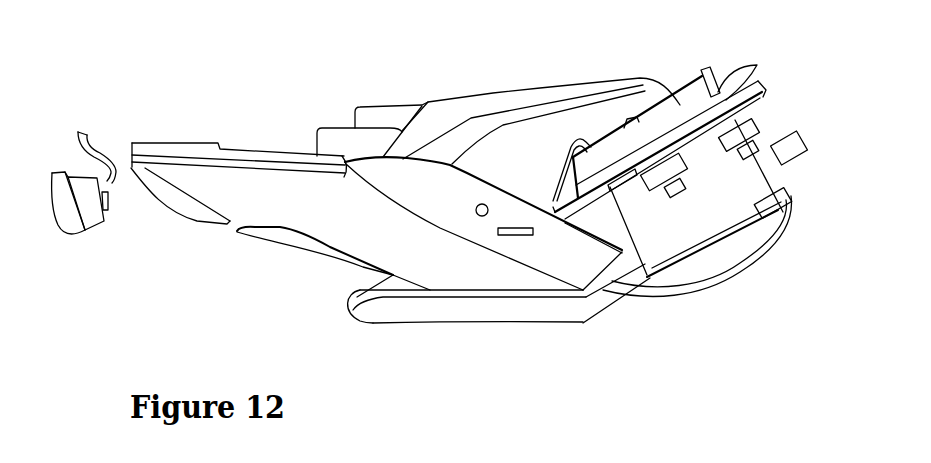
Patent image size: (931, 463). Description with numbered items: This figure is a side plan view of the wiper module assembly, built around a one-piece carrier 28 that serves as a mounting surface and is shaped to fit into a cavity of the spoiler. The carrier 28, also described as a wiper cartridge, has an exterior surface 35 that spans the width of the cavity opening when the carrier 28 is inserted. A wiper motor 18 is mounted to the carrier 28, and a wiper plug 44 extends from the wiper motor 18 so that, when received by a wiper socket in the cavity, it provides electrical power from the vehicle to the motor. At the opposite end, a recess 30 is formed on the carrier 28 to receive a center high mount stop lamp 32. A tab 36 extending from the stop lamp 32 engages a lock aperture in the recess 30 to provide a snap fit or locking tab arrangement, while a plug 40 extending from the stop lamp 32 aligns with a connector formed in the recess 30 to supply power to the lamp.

The wiper motor 18 is at (663, 243).
The carrier 28 is at (156, 297).
The recess 30 is at (167, 193).
The center high mount stop lamp (CHMSL) 32 is at (56, 173).
The exterior surface 35 is at (283, 198).
The tab 36 is at (110, 193).
The plug 40 is at (88, 136).
The wiper plug 44 is at (795, 132).